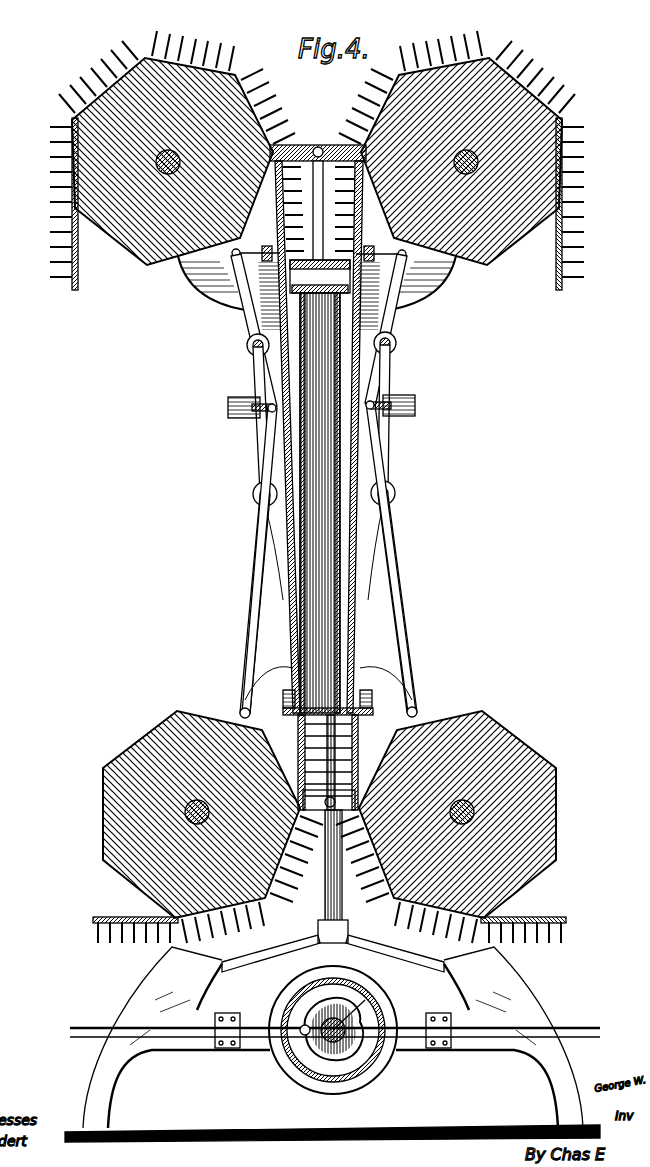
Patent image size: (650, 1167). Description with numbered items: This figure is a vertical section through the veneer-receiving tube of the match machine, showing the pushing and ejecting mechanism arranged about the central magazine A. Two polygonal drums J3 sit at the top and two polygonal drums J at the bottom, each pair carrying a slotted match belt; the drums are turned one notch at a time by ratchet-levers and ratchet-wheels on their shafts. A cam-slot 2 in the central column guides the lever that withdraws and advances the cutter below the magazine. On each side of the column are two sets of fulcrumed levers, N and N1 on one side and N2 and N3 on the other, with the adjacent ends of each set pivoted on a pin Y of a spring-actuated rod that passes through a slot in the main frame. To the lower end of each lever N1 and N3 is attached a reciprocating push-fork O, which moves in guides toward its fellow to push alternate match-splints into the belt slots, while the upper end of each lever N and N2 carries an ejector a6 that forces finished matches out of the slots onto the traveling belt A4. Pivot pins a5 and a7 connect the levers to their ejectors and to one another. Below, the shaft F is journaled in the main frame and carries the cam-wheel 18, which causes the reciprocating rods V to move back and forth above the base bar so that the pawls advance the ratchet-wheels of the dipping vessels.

The polygonal drum J3 is at (317, 170).
The polygonal drum J is at (329, 808).
The cam-slot 2 is at (318, 252).
The traveling belt A4 is at (320, 276).
The magazine A is at (330, 448).
The ejector a6 is at (262, 260).
The pivot pin a5 is at (374, 258).
The pivot joint a7 is at (250, 342).
The lever N is at (241, 332).
The lever N1 is at (247, 562).
The lever N2 is at (400, 305).
The lever N3 is at (398, 572).
The pin Y is at (260, 412).
The push-fork O is at (265, 705).
The reciprocating rod V is at (335, 1019).
The shaft F is at (368, 1005).
The cam-wheel 18 is at (390, 1068).